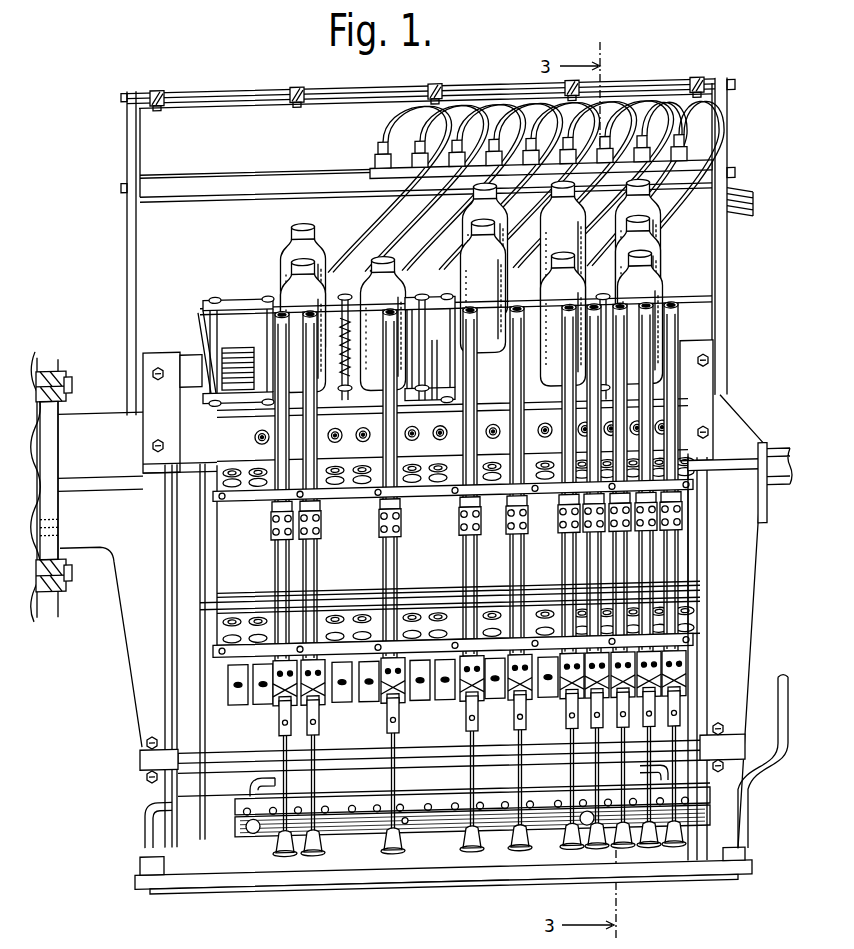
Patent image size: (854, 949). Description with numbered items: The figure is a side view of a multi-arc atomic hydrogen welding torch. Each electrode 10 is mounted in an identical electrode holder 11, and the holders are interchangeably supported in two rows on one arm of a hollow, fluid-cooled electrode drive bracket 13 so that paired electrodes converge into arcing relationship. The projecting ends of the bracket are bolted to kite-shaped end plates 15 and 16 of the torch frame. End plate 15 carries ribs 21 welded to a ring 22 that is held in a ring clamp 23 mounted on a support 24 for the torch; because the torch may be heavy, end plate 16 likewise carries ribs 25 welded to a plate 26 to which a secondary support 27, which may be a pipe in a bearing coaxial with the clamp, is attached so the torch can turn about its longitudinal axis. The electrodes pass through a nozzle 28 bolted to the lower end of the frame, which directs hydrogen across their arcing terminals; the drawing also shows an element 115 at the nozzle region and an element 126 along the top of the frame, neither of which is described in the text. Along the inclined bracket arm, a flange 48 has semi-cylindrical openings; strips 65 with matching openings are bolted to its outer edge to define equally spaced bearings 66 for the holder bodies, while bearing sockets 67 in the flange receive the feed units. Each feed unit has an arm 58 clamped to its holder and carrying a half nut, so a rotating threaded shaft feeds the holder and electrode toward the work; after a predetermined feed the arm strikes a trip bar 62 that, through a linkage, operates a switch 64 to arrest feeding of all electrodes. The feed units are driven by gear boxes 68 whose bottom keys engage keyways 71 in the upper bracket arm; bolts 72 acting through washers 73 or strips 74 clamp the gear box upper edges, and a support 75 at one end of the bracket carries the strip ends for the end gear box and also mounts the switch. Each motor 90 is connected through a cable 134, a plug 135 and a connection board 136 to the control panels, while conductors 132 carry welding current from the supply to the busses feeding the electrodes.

The electrode 10 is at (322, 746).
The electrode holder 11 is at (318, 579).
The electrode drive bracket 13 is at (262, 561).
The end plate 15 is at (162, 660).
The end plate 16 is at (708, 660).
The rib 21 is at (104, 483).
The ring 22 is at (50, 521).
The ring clamp 23 is at (48, 362).
The support 24 is at (38, 345).
The rib 25 is at (735, 479).
The plate 26 is at (763, 453).
The secondary support 27 is at (780, 496).
The nozzle 28 is at (165, 779).
The flange 48 is at (693, 619).
The arm 58 is at (402, 517).
The trip bar 62 is at (258, 595).
The switch 64 is at (183, 350).
The strip 65 is at (243, 497).
The bearing 66 is at (364, 480).
The bearing socket 67 is at (356, 467).
The gear box 68 is at (435, 345).
The keyway 71 is at (245, 347).
The bolt 72 is at (345, 294).
The washer 73 is at (352, 316).
The strip 74 is at (238, 296).
The support 75 is at (203, 312).
The motor 90 is at (281, 236).
The nozzle cup 115 is at (340, 856).
The top rail 126 is at (656, 86).
The conductor 132 is at (742, 197).
The cable 134 is at (372, 219).
The plug 135 is at (383, 142).
The connection board 136 is at (303, 168).